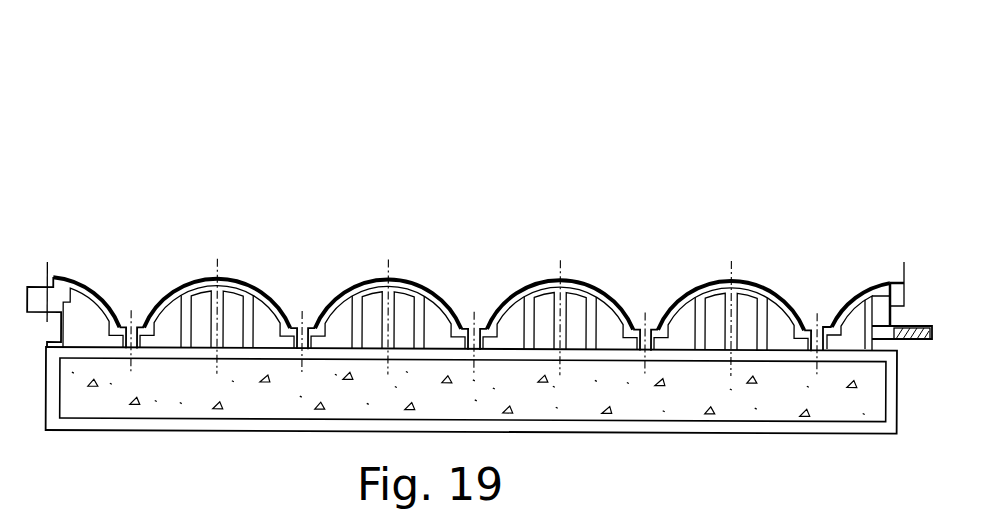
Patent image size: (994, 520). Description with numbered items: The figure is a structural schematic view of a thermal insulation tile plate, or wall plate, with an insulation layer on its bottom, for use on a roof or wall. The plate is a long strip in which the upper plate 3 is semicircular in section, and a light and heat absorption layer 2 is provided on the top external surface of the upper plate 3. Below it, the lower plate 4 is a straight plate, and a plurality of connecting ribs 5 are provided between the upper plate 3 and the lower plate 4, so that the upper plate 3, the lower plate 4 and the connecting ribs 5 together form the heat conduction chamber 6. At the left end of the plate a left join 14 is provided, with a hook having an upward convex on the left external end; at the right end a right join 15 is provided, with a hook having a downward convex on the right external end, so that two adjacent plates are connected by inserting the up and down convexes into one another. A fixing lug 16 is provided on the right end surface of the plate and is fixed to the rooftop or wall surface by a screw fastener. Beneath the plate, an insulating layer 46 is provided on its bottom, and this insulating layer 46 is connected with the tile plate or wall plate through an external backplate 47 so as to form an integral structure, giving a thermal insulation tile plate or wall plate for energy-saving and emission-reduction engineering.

The light and heat absorption layer 2 is at (196, 288).
The upper plate 3 is at (270, 312).
The lower plate 4 is at (336, 352).
The connecting ribs 5 is at (554, 335).
The heat conduction chamber 6 is at (780, 308).
The left join 14 is at (35, 295).
The right join 15 is at (898, 303).
The fixing lug 16 is at (928, 326).
The insulating layer 46 is at (365, 397).
The external backplate 47 is at (427, 430).